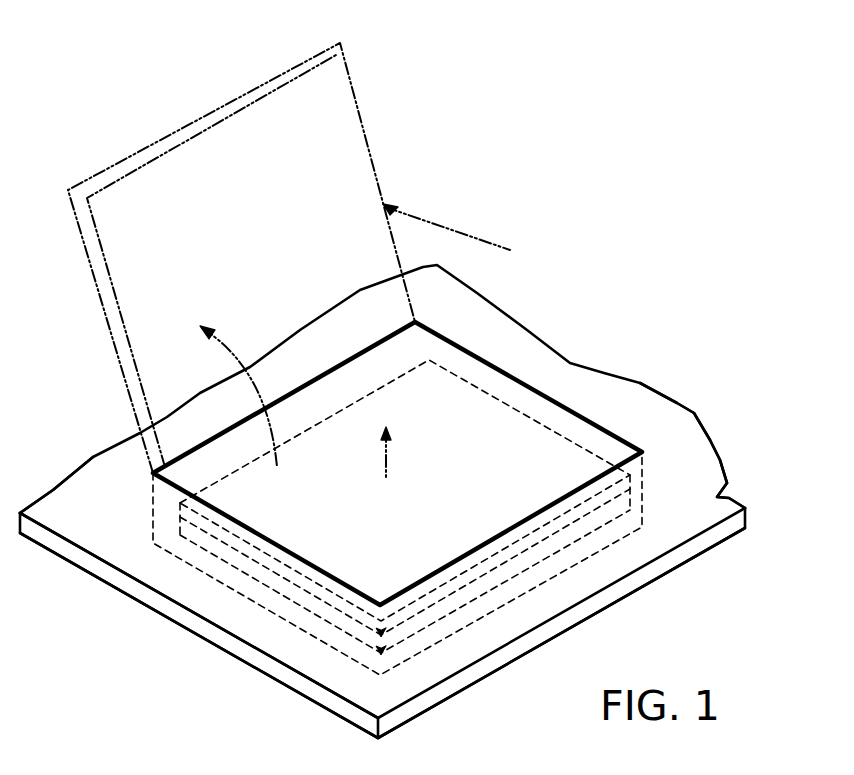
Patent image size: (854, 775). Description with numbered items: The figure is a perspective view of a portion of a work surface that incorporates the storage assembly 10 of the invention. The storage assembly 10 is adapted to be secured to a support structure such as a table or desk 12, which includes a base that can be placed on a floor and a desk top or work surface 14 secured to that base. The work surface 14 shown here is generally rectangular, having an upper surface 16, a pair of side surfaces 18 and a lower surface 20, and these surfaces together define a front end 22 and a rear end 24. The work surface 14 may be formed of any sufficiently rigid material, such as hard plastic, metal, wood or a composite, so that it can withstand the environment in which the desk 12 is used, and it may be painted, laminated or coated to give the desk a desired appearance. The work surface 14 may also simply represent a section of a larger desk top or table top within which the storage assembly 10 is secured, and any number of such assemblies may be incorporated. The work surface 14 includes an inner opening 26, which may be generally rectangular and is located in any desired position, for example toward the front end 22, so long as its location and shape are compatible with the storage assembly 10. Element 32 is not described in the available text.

The storage assembly 10 is at (612, 253).
The desk 12 is at (695, 407).
The work surface 14 is at (718, 453).
The upper surface 16 is at (727, 496).
The side surfaces 18 is at (246, 655).
The lower surface 20 is at (288, 691).
The front end 22 is at (639, 582).
The rear end 24 is at (54, 489).
The inner opening 26 is at (571, 404).
The sample region 32 is at (444, 360).